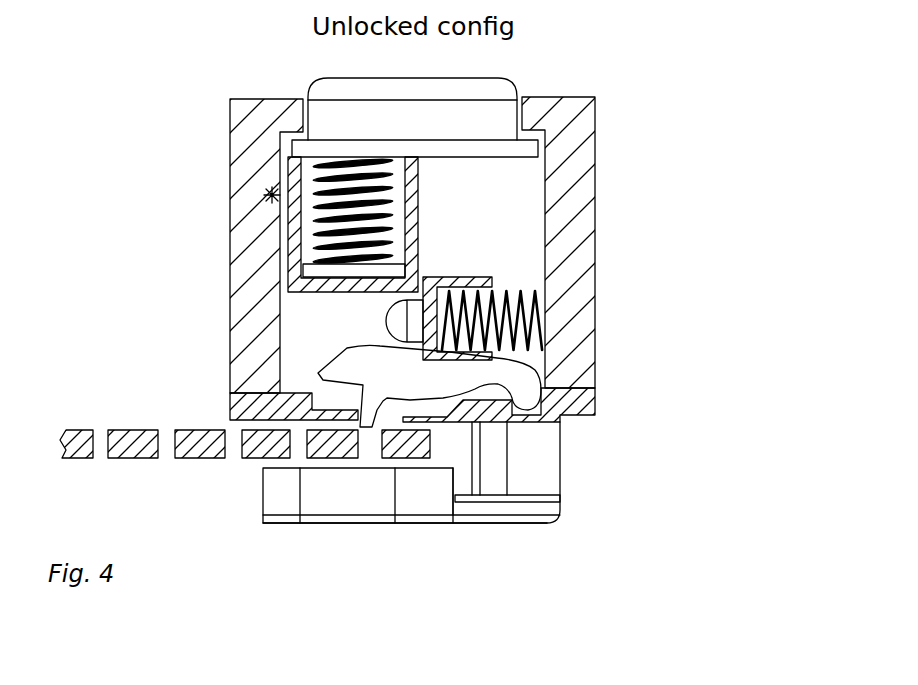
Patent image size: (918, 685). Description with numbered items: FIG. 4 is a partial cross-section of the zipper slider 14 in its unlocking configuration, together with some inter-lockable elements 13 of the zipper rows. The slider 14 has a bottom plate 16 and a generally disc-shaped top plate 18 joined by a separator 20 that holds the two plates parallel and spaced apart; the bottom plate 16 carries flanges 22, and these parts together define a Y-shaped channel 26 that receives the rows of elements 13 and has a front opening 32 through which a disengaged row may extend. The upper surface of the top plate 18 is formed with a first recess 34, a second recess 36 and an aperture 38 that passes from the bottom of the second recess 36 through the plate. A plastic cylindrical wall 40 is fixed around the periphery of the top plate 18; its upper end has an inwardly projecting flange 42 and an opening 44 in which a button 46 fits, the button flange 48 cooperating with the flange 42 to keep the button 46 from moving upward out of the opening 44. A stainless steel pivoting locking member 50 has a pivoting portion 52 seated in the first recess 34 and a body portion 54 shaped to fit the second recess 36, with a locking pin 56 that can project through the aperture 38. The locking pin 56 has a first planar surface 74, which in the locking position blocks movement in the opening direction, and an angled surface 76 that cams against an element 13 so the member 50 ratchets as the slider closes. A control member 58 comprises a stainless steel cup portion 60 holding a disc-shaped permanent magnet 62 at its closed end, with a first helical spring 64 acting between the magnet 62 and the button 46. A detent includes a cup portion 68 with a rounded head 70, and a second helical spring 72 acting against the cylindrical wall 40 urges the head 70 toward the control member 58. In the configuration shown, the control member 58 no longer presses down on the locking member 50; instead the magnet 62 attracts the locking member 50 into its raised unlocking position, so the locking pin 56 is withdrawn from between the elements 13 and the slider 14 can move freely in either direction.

The inter-lockable elements 13 is at (270, 460).
The slider 14 is at (600, 90).
The bottom plate 16 is at (560, 522).
The top plate 18 is at (575, 410).
The separator 20 is at (545, 457).
The bottom plate flanges 22 is at (345, 495).
The Y-shaped channel 26 is at (447, 452).
The front opening 32 is at (522, 485).
The first recess 34 is at (543, 385).
The second recess 36 is at (343, 412).
The aperture 38 is at (378, 405).
The cylindrical wall 40 is at (577, 238).
The inwardly projecting flange 42 is at (292, 115).
The opening 44 is at (510, 83).
The button 46 is at (427, 107).
The button flange 48 is at (537, 150).
The pivoting locking member 50 is at (348, 357).
The pivoting portion 52 is at (527, 388).
The body portion 54 is at (380, 370).
The locking pin 56 is at (342, 420).
The control member 58 is at (270, 194).
The cup portion 60 is at (415, 207).
The disc-shaped permanent magnet 62 is at (412, 270).
The first helical spring 64 is at (398, 173).
The detent cup portion 68 is at (480, 272).
The rounded head 70 is at (385, 312).
The second helical spring 72 is at (518, 288).
The first planar surface 74 is at (357, 410).
The angled surface 76 is at (387, 412).